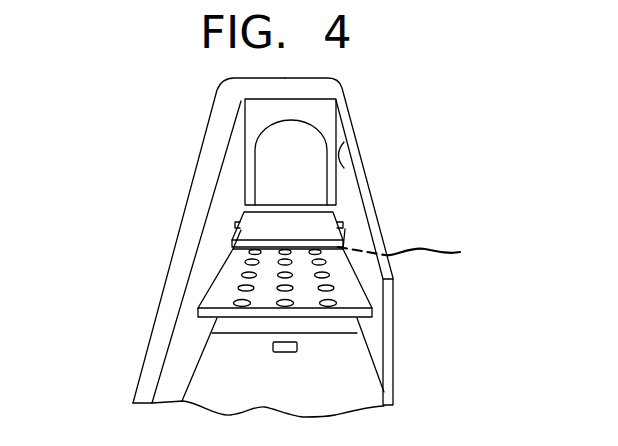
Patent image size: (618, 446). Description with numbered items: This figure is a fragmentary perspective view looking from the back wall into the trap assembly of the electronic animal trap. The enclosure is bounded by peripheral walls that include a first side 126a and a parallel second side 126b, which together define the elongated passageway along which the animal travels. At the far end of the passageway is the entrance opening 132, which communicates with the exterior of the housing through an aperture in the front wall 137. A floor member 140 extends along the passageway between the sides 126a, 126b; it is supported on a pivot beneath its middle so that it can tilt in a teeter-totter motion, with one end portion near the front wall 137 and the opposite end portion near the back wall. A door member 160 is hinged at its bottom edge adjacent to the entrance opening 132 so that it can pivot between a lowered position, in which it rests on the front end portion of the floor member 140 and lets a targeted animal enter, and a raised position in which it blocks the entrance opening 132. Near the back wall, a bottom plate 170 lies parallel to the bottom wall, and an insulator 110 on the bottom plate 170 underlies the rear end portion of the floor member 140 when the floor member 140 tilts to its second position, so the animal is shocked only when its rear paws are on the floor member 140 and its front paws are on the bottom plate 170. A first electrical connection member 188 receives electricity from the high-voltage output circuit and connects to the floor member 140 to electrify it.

The insulator 110 is at (297, 347).
The first side 126a is at (367, 170).
The second side 126b is at (178, 237).
The entrance opening 132 is at (311, 169).
The front wall 137 is at (350, 140).
The floor member 140 is at (360, 303).
The door member 160 is at (247, 217).
The bottom plate 170 is at (218, 370).
The first electrical connection member 188 is at (418, 247).